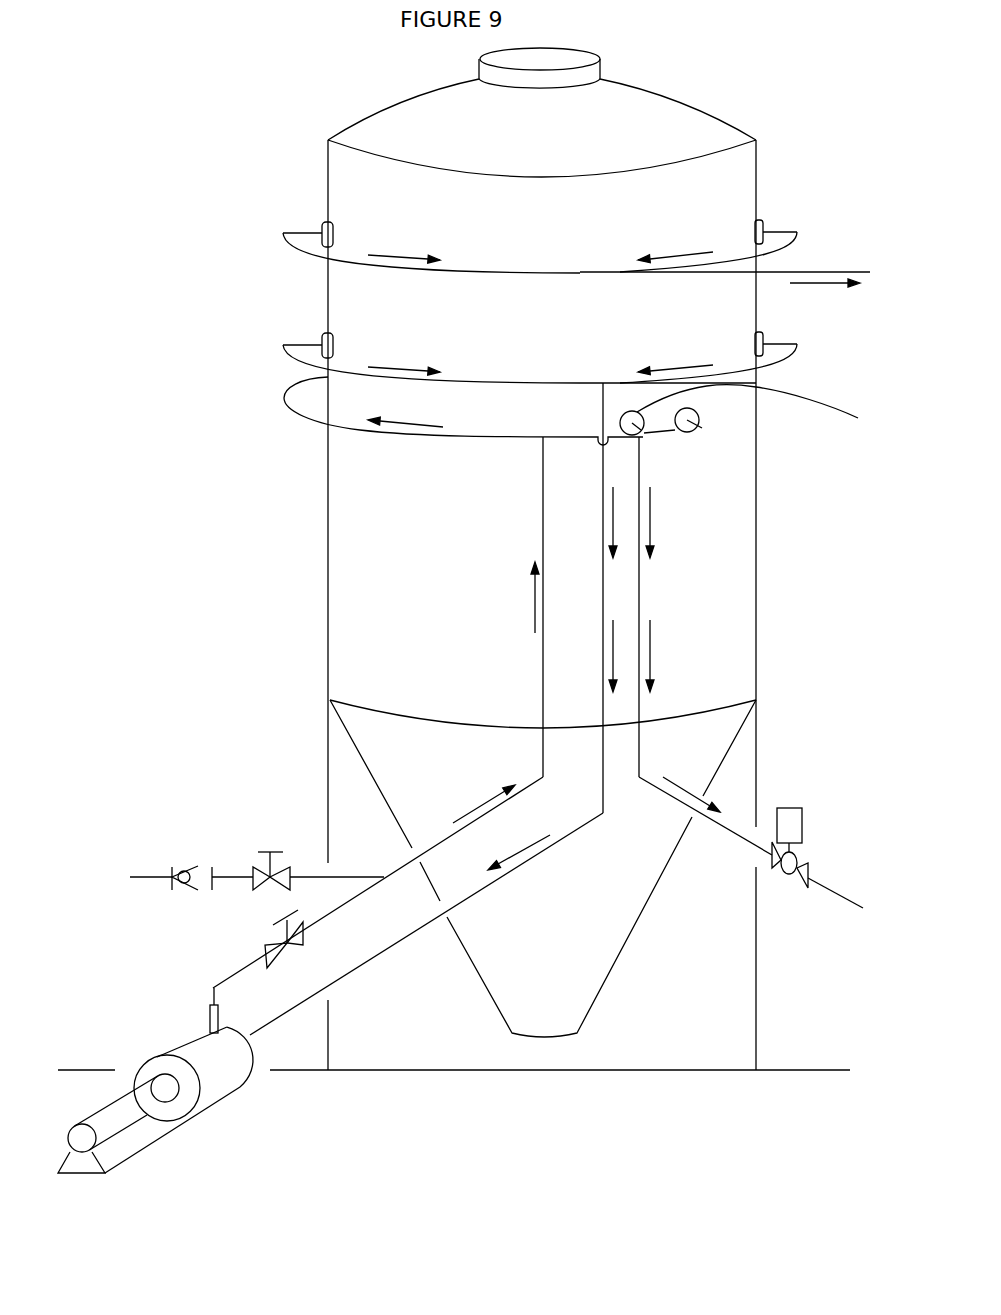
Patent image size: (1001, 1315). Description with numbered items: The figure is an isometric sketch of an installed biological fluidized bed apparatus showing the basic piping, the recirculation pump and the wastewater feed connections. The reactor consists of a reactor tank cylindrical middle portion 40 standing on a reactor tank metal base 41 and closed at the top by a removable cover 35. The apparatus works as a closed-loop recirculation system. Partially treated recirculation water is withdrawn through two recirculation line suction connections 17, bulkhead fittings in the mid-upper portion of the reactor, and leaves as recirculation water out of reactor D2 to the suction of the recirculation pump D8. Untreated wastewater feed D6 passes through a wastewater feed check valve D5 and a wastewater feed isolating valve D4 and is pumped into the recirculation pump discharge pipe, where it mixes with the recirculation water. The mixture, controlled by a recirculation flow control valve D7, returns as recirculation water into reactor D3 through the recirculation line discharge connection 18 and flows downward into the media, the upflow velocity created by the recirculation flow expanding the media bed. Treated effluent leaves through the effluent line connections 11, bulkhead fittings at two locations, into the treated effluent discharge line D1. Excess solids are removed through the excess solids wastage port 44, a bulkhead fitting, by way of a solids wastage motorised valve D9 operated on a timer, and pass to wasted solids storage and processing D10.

The removable cover 35 is at (600, 60).
The effluent line connection 11 is at (322, 226).
The recirculation line suction connection 17 is at (322, 338).
The recirculation line discharge connection 18 is at (695, 410).
The excess solids wastage port 44 is at (758, 407).
The reactor tank cylindrical middle portion 40 is at (757, 558).
The reactor tank metal base 41 is at (757, 731).
The treated effluent discharge line D1 is at (817, 272).
The recirculation water out of reactor D2 is at (780, 358).
The recirculation water into reactor D3 is at (665, 435).
The wastewater feed isolating valve D4 is at (250, 868).
The wastewater feed check valve D5 is at (172, 872).
The wastewater feed D6 is at (139, 877).
The recirculation flow control valve D7 is at (263, 952).
The recirculation pump D8 is at (195, 1117).
The solids wastage motorised valve D9 is at (787, 875).
The wasted solids storage and processing D10 is at (856, 903).